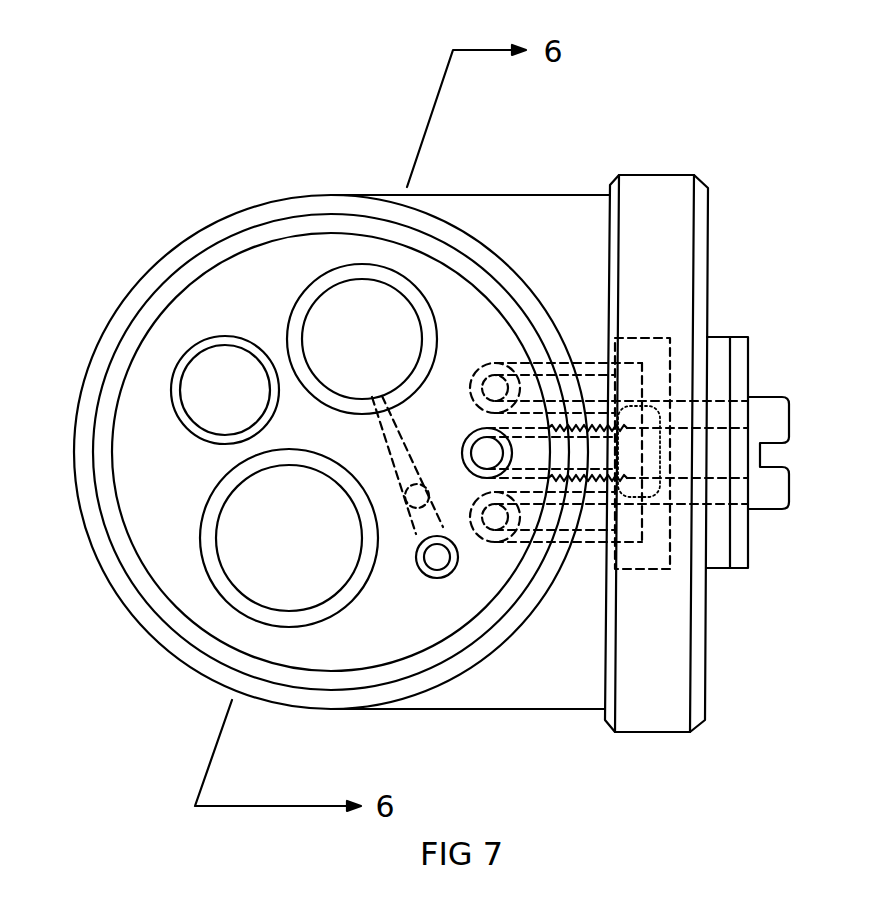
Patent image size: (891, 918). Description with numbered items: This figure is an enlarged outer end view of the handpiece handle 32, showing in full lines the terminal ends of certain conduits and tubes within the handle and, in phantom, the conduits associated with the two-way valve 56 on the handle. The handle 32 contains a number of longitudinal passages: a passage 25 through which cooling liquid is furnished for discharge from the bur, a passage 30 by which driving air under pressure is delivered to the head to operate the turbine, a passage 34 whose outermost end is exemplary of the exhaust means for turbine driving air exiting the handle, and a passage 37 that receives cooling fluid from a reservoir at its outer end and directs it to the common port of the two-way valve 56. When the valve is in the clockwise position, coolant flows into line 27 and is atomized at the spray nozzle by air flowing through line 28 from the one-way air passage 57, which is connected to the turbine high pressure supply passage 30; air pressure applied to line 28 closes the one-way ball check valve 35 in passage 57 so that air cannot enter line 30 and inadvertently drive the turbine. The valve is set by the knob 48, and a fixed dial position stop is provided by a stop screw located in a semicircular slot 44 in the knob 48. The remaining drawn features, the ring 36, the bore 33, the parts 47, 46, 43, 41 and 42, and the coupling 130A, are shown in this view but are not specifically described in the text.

The handle 32 is at (247, 207).
The cylinder body 130A is at (272, 708).
The housing 36 is at (468, 710).
The bore 33 is at (222, 346).
The passage 30 is at (356, 282).
The passage 34 is at (276, 468).
The line 28 is at (421, 580).
The one-way air passage 57 is at (396, 425).
The 1-way ball check valve 35 is at (404, 495).
The passage 25 is at (478, 370).
The passage 37 is at (465, 471).
The line 27 is at (492, 542).
The knob 48 is at (652, 175).
The ring 47 is at (722, 337).
The ring 46 is at (752, 337).
The fitting 43 is at (790, 410).
The 2-way valve 56 is at (760, 545).
The valve bore 41 is at (630, 543).
The semicircular slot 44 is at (663, 572).
The threaded passage 42 is at (600, 482).